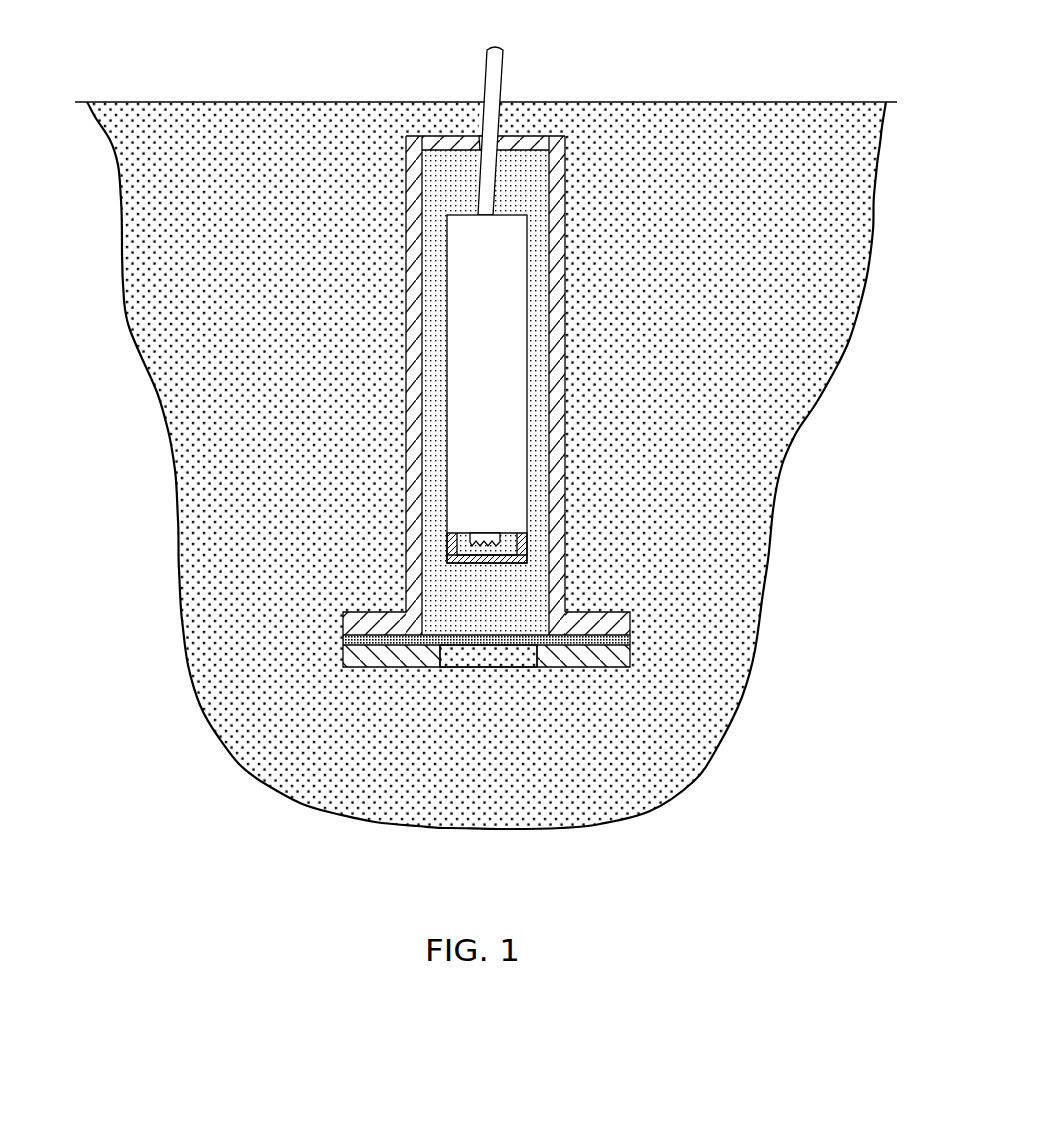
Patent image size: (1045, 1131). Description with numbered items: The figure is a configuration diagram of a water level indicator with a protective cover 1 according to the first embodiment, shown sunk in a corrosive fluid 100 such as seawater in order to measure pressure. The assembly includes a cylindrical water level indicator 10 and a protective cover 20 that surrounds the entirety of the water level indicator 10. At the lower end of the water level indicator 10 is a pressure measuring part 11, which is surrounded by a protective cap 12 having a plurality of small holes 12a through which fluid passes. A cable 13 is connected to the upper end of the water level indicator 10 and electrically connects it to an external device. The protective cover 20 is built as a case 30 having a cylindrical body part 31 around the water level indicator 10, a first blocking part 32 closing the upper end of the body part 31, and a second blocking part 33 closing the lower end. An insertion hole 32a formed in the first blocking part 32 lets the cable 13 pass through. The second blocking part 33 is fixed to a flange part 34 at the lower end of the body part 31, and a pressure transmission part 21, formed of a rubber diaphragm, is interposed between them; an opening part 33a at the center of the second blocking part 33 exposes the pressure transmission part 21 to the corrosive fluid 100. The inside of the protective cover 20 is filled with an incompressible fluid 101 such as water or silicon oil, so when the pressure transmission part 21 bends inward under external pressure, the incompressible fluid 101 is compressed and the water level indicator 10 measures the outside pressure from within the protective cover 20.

The water level indicator with a protective cover 1 is at (543, 449).
The corrosive fluid 100 is at (735, 102).
The incompressible fluid 101 is at (533, 202).
The water level indicator 10 is at (447, 388).
The pressure measuring part 11 is at (477, 547).
The protective cap 12 is at (473, 562).
The small holes 12a is at (500, 566).
The cable 13 is at (483, 85).
The protective cover 20 is at (403, 449).
The pressure transmission part 21 is at (480, 648).
The case 30 is at (580, 452).
The body part 31 is at (567, 353).
The first blocking part 32 is at (523, 137).
The insertion hole 32a is at (487, 142).
The second blocking part 33 is at (563, 670).
The opening part 33a is at (530, 658).
The flange part 34 is at (600, 620).